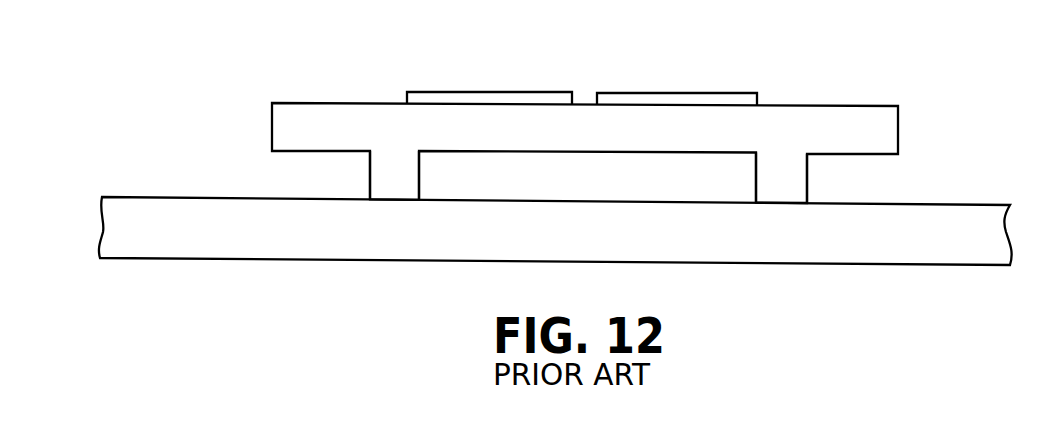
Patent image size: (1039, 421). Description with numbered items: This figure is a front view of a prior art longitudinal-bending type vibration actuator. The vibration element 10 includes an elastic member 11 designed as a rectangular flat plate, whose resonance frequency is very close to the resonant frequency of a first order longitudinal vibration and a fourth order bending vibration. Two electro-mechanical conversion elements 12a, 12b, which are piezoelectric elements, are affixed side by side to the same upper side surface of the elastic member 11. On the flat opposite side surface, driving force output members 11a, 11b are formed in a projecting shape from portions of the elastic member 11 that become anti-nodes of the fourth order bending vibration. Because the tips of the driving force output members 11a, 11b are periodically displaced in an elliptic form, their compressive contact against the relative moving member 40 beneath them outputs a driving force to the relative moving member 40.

The vibration element 10 is at (605, 107).
The elastic member 11 is at (605, 150).
The driving force output member 11a is at (413, 172).
The driving force output member 11b is at (798, 178).
The electro-mechanical conversion element 12a is at (513, 95).
The electro-mechanical conversion element 12b is at (715, 95).
The relative moving member 40 is at (155, 248).